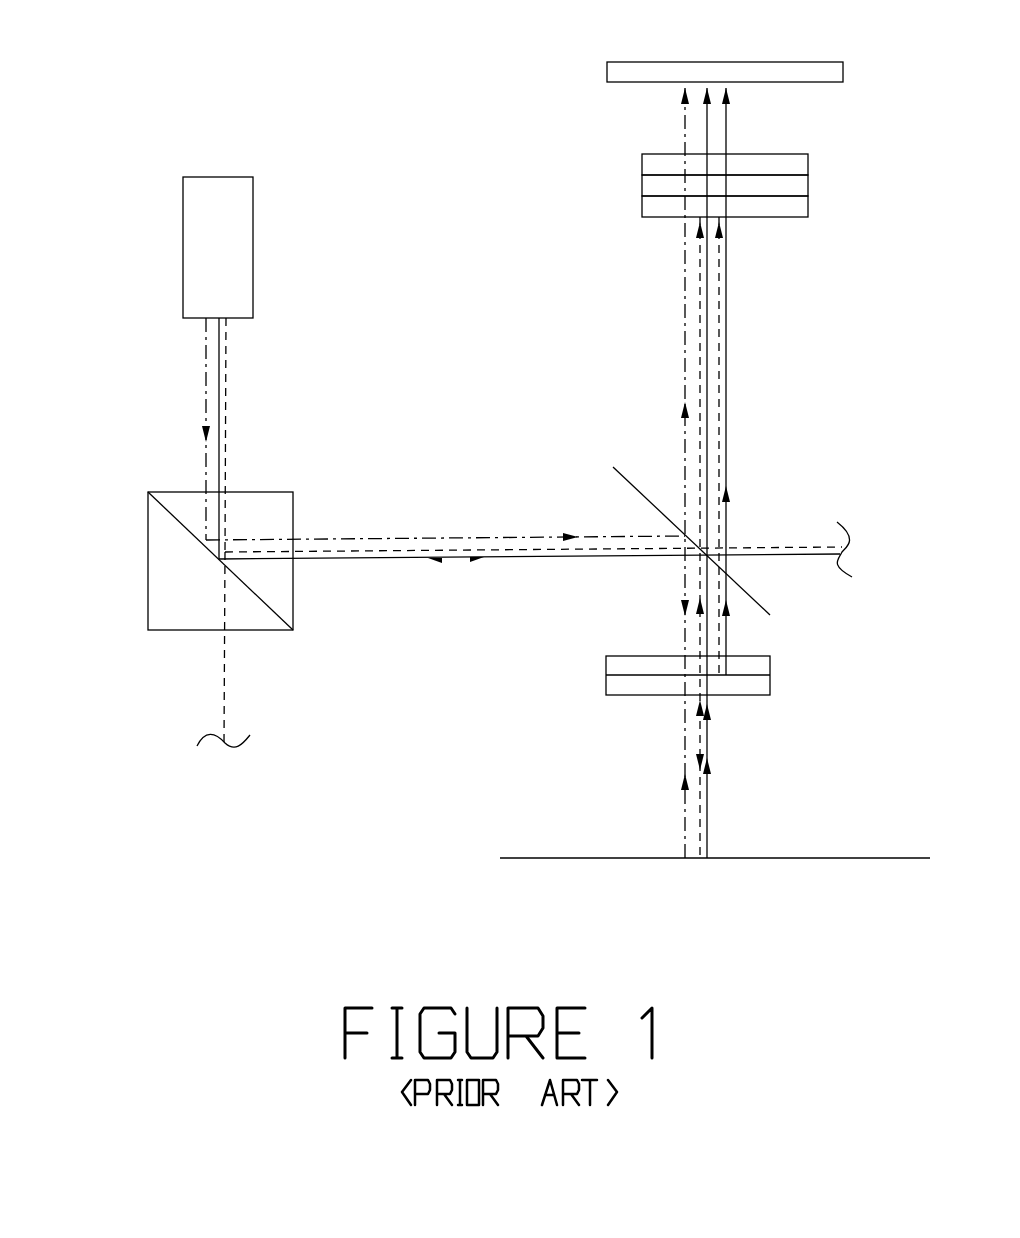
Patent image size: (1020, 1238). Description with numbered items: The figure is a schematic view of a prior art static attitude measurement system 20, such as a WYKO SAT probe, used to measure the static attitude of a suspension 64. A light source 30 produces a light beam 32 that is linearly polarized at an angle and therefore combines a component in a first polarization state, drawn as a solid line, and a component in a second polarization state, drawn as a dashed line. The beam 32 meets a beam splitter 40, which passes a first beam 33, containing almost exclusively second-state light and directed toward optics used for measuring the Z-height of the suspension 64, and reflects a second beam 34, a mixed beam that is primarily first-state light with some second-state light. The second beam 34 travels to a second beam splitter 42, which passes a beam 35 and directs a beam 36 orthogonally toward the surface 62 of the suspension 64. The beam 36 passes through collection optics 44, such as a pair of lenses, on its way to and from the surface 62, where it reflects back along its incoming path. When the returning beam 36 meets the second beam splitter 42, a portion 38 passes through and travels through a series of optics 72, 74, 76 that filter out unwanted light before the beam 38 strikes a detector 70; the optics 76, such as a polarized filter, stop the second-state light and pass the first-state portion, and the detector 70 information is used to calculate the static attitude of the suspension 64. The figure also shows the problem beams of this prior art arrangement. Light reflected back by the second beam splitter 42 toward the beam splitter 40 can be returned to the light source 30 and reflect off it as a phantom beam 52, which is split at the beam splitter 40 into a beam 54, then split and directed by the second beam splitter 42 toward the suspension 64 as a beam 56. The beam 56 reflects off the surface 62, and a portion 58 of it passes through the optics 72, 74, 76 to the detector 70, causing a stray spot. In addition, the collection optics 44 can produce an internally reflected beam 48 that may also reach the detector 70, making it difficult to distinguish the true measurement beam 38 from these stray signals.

The static attitude measurement system 20 is at (400, 80).
The light source 30 is at (253, 237).
The light beam 32 is at (228, 403).
The first beam 33 is at (224, 706).
The second beam 34 is at (378, 558).
The beam 35 is at (792, 547).
The beam 36 is at (707, 589).
The passed portion 38 is at (705, 382).
The beam splitter 40 is at (148, 544).
The second beam splitter 42 is at (760, 603).
The collection optics 44 is at (770, 660).
The reflected beam 48 is at (726, 293).
The phantom beam 52 is at (206, 362).
The beam 54 is at (537, 537).
The beam 56 is at (686, 725).
The portion of reflected beam 58 is at (683, 307).
The surface 62 is at (837, 858).
The suspension 64 is at (620, 890).
The detector 70 is at (822, 82).
The optics 72 is at (642, 160).
The optics 74 is at (642, 186).
The optics 76 is at (642, 210).